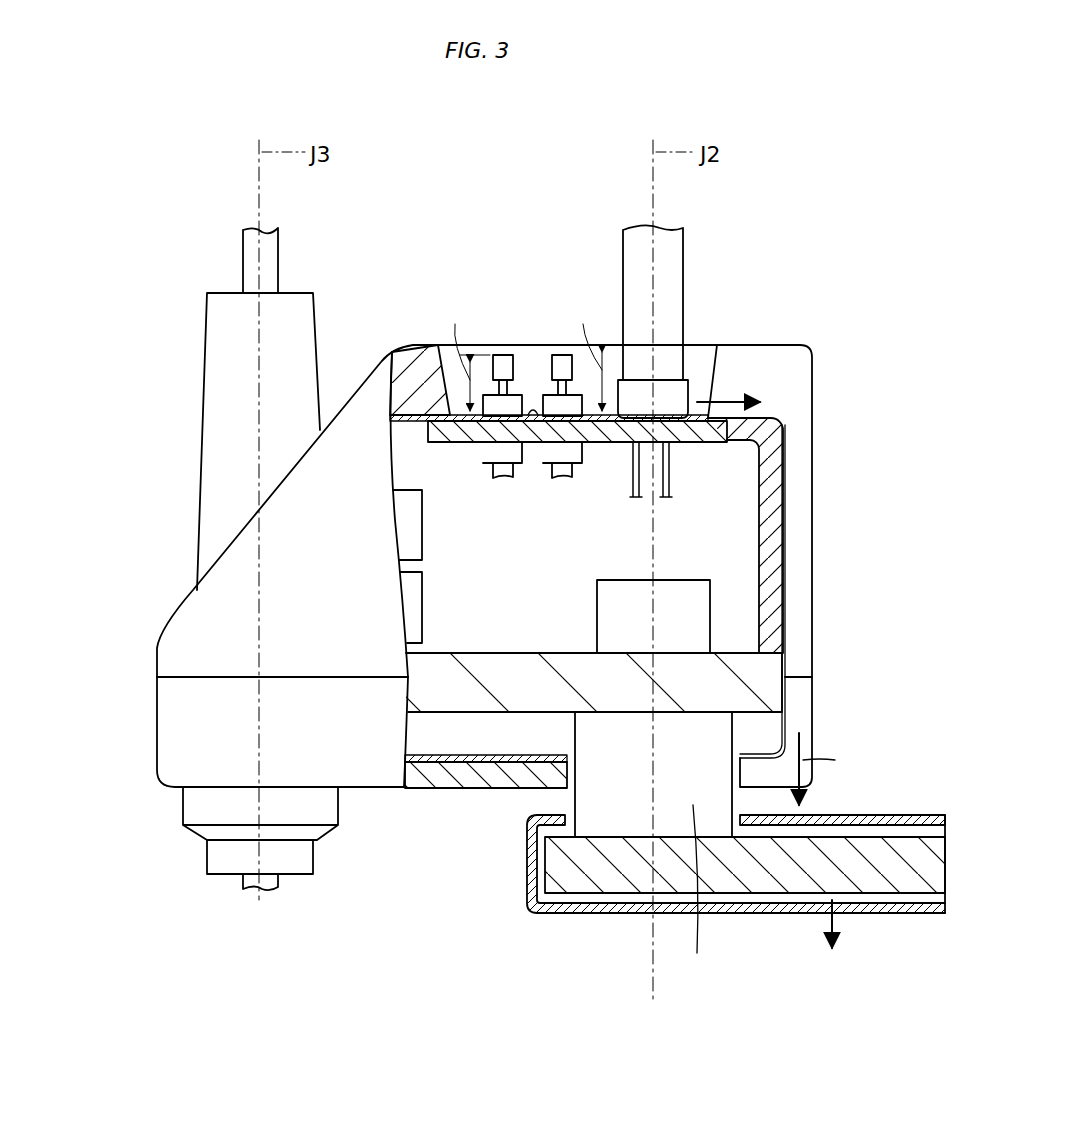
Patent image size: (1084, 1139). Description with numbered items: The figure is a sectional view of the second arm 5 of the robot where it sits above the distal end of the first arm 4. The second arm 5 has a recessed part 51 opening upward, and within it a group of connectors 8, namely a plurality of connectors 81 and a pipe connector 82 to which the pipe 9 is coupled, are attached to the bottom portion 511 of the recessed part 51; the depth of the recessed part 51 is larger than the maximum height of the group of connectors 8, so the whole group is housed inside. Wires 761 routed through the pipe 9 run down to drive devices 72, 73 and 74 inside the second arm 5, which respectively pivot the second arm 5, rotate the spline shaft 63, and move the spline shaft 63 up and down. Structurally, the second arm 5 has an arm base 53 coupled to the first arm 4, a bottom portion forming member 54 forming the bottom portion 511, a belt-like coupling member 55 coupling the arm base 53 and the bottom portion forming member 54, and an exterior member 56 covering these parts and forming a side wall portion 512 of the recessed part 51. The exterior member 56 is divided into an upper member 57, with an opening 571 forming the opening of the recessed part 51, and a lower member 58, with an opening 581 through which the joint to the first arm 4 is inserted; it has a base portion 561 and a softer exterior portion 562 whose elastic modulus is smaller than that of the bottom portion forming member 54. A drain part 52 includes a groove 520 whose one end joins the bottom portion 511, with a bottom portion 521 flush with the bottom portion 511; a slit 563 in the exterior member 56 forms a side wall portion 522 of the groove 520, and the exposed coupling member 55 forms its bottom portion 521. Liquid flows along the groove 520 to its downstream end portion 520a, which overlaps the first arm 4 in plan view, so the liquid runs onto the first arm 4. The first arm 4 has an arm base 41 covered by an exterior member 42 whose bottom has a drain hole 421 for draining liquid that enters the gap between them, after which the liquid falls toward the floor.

The first arm 4 is at (743, 870).
The arm base 41 is at (900, 870).
The exterior member 42 is at (890, 815).
The drain hole 421 is at (773, 908).
The second arm 5 is at (662, 586).
The recessed part 51 is at (531, 352).
The bottom portion 511 is at (530, 424).
The side wall portion 512 is at (708, 363).
The drain part 52 is at (780, 378).
The groove 520 is at (674, 553).
The end portion 520a is at (758, 773).
The bottom portion 521 is at (780, 508).
The side wall portion 522 is at (795, 470).
The arm base 53 is at (450, 680).
The bottom portion forming member 54 is at (452, 444).
The coupling member 55 is at (782, 545).
The exterior member 56 is at (226, 566).
The upper member 57 is at (190, 656).
The opening 571 is at (693, 363).
The lower member 58 is at (190, 730).
The base portion 561 is at (788, 583).
The exterior portion 562 is at (797, 630).
The slit 563 is at (795, 412).
The opening 581 is at (565, 775).
The spline shaft 63 is at (245, 262).
The drive device 72 is at (627, 613).
The drive device 73 is at (405, 605).
The drive device 74 is at (392, 520).
The wires 761 is at (643, 492).
The group of connectors 8 is at (574, 329).
The connectors 81 is at (502, 355).
The pipe connector 82 is at (638, 395).
The pipe 9 is at (668, 240).